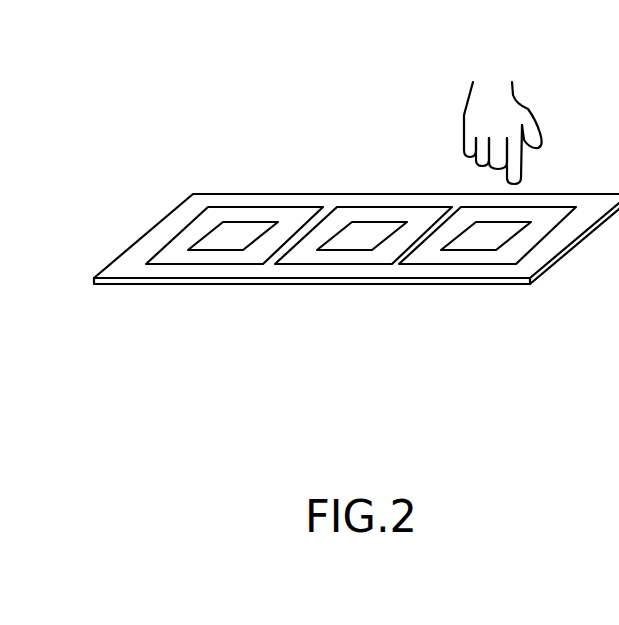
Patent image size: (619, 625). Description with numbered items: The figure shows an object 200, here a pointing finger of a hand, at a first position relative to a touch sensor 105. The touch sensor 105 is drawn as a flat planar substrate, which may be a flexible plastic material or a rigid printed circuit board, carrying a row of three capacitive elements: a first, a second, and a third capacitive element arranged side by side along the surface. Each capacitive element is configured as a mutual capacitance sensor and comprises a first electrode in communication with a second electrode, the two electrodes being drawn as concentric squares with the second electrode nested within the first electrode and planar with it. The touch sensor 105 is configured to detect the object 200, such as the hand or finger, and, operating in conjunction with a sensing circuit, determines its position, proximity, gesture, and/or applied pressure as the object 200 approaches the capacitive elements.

The touch sensor 105 is at (131, 247).
The object 200 is at (528, 109).